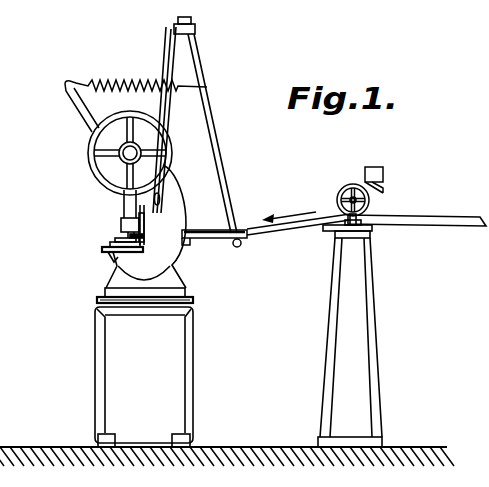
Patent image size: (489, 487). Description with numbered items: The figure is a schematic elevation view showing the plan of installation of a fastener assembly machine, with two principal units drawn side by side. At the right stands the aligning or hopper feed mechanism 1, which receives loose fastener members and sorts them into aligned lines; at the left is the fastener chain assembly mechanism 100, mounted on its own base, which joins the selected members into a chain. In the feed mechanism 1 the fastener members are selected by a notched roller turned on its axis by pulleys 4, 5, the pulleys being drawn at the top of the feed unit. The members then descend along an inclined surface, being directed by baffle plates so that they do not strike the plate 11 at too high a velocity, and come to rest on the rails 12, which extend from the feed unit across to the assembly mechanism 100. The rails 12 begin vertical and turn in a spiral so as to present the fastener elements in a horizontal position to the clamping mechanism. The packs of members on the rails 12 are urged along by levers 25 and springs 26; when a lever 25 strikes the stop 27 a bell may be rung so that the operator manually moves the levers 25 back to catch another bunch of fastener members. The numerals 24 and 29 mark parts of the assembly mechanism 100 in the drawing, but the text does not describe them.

The aligning or hopper feed mechanism 1 is at (373, 340).
The pulley 4 is at (346, 188).
The pulley 5 is at (367, 223).
The plate 11 is at (488, 93).
The rails 12 is at (275, 232).
The die 24 is at (115, 257).
The levers 25 is at (219, 158).
The springs 26 is at (124, 82).
The stop 27 is at (169, 52).
The ram 29 is at (126, 208).
The fastener chain assembly mechanism 100 is at (190, 338).